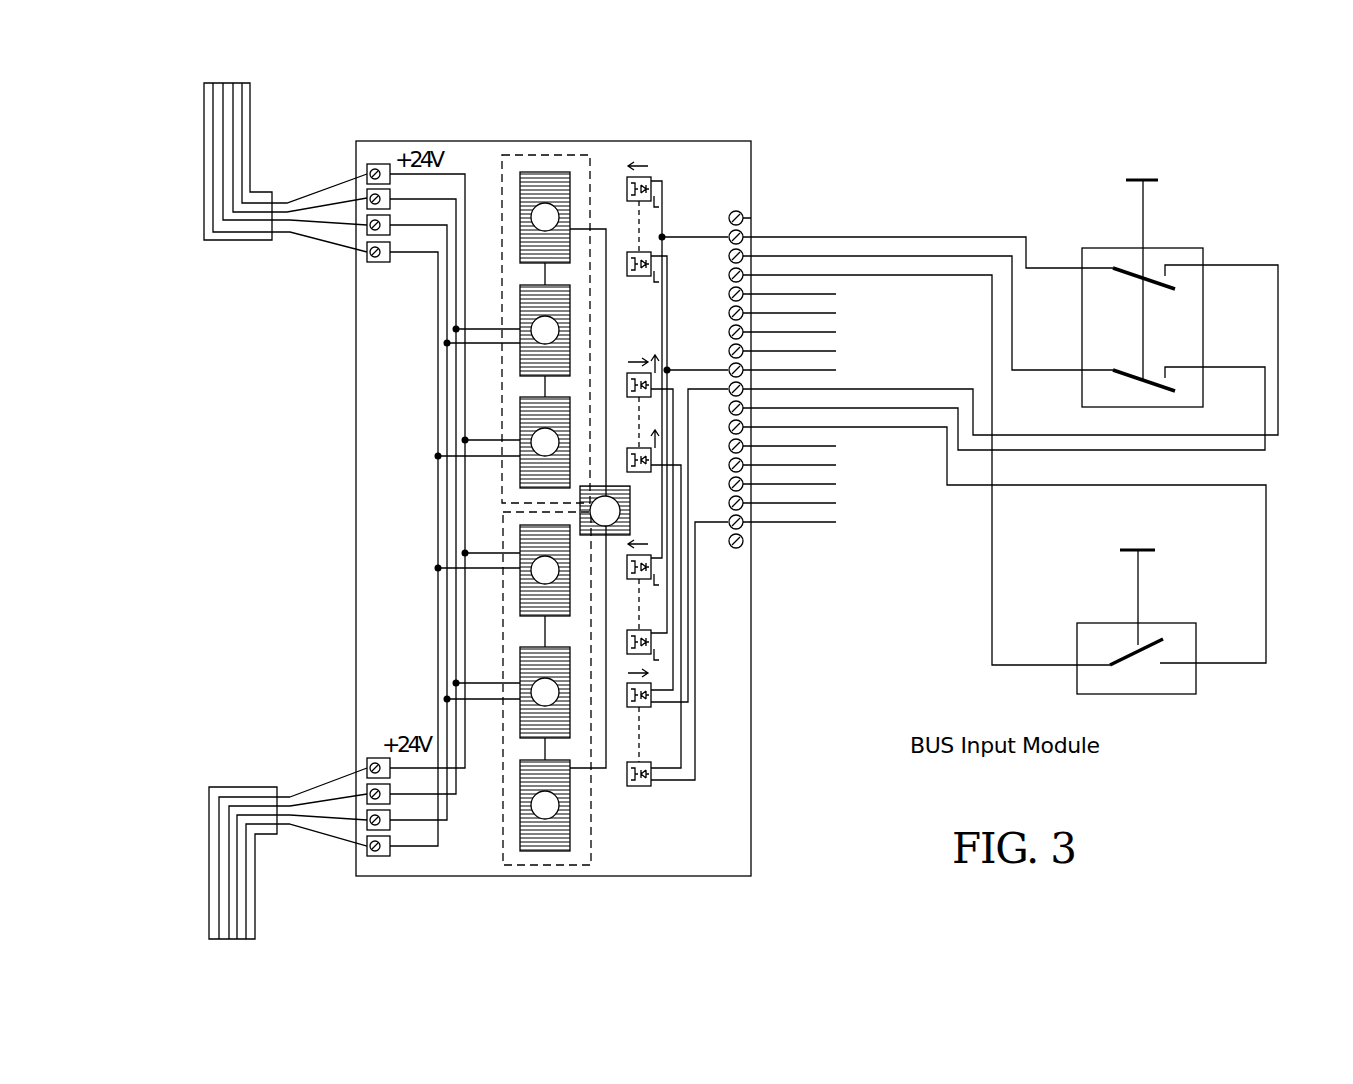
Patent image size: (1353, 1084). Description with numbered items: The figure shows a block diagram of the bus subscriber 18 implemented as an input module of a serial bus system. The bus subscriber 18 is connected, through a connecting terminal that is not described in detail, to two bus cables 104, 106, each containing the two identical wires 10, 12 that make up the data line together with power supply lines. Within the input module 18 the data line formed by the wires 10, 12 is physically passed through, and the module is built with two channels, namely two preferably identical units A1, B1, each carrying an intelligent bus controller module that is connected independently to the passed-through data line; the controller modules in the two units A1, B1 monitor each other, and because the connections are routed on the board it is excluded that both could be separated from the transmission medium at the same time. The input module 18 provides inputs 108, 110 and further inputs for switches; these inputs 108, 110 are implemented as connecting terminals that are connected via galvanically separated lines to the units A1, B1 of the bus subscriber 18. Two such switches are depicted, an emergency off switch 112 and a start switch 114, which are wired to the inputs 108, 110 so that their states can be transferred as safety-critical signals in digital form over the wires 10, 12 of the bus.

The wire 10 is at (323, 797).
The wire 12 is at (317, 822).
The bus subscriber 18 is at (356, 652).
The bus cable 104 is at (230, 235).
The bus cable 106 is at (230, 787).
The input 108 is at (753, 227).
The input 110 is at (730, 386).
The emergency off switch 112 is at (1168, 248).
The start switch 114 is at (1182, 679).
The unit A1 is at (570, 160).
The unit B1 is at (583, 829).